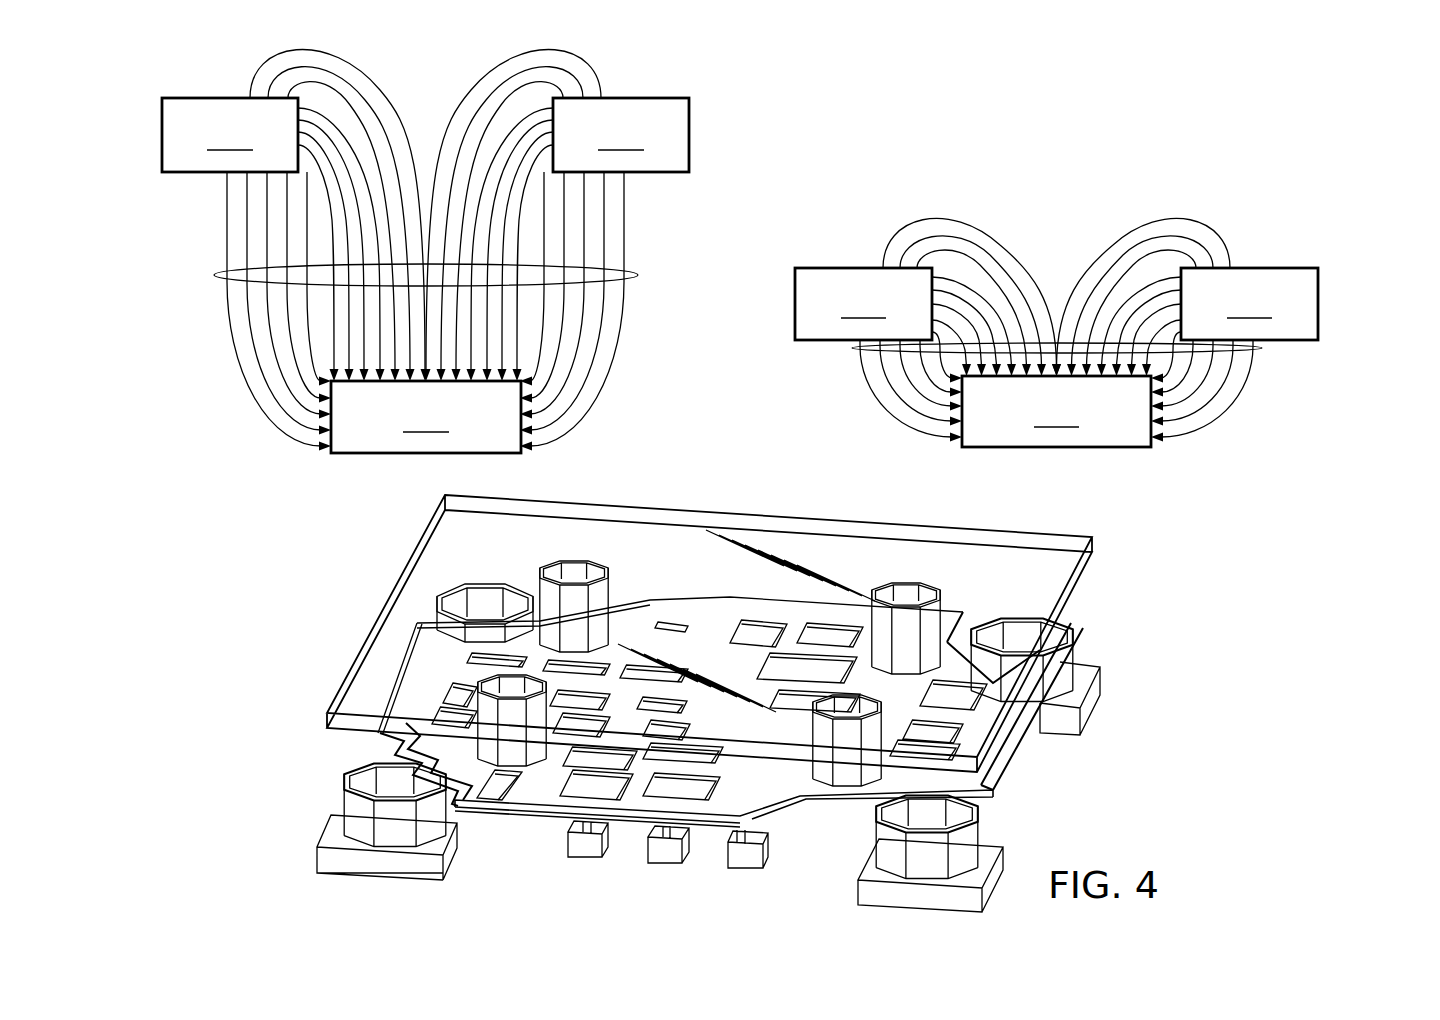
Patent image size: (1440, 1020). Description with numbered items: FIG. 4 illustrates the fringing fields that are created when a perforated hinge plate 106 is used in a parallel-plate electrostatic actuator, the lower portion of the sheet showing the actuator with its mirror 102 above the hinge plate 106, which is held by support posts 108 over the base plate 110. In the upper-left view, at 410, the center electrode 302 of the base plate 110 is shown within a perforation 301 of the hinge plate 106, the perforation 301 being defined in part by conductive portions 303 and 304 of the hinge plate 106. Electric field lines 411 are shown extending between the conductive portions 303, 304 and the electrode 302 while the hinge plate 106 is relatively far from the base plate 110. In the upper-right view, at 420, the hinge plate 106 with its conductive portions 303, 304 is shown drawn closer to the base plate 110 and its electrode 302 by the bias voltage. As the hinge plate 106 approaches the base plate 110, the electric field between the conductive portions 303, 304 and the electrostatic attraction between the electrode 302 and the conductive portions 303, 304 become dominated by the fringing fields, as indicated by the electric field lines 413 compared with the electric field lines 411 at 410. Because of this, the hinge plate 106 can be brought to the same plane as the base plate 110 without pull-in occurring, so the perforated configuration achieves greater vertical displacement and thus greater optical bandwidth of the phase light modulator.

The mirror 102 is at (748, 528).
The hinge plate 106 is at (130, 132).
The support posts 108 is at (338, 819).
The base plate 110 is at (220, 411).
The perforation 301 is at (409, 72).
The center electrode 302 is at (741, 414).
The conductive portion 303 is at (547, 219).
The conductive portion 304 is at (935, 219).
The first configuration 410 is at (170, 72).
The electric field lines 411 is at (214, 273).
The electric field lines 413 is at (1263, 348).
The second configuration 420 is at (1177, 168).